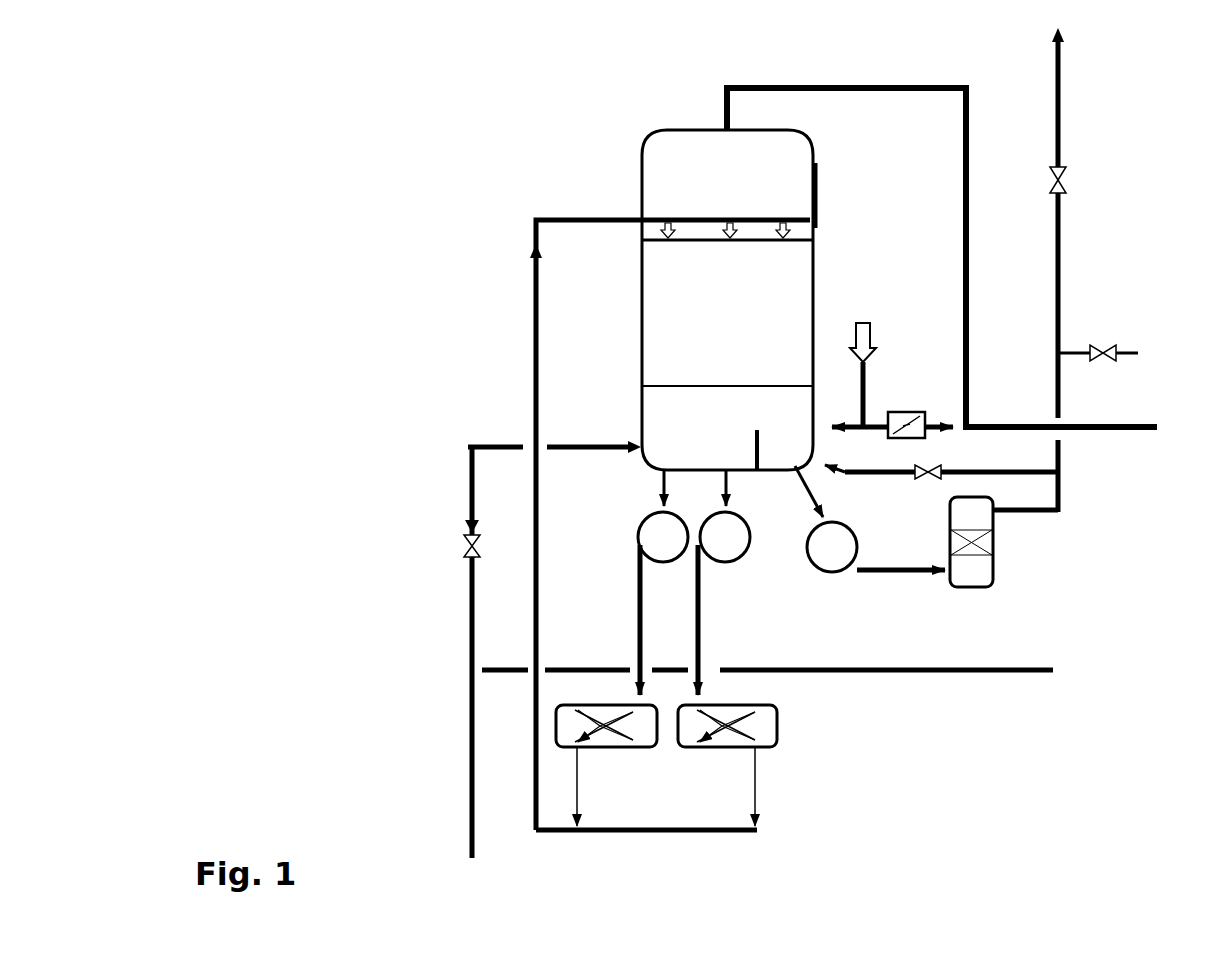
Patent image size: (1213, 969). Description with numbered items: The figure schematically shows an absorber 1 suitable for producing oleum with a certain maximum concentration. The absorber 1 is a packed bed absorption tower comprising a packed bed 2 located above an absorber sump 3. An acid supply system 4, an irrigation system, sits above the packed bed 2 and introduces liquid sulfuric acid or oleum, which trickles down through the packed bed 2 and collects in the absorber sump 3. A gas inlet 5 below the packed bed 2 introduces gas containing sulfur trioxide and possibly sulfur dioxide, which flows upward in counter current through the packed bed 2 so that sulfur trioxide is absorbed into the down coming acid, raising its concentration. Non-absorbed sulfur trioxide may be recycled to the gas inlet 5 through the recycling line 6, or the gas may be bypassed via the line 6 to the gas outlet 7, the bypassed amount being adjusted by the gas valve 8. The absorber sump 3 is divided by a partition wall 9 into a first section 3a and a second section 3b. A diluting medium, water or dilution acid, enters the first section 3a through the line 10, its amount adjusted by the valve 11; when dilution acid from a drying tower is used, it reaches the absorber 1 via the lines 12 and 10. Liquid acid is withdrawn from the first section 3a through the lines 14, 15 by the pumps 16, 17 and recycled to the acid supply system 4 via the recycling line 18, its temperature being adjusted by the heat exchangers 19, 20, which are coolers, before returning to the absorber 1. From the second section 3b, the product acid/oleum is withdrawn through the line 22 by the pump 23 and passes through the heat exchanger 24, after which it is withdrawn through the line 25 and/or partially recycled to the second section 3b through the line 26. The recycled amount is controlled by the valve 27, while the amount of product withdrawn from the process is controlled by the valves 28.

The absorber 1 is at (630, 150).
The packed bed 2 is at (798, 270).
The absorber sump 3 is at (676, 405).
The first section 3a is at (688, 455).
The second section 3b is at (800, 425).
The acid supply system 4 is at (772, 203).
The gas inlet 5 is at (826, 420).
The recycling line 6 is at (858, 74).
The gas outlet 7 is at (720, 105).
The gas valve 8 is at (905, 405).
The partition wall 9 is at (762, 418).
The line 10 is at (468, 452).
The valve 11 is at (467, 532).
The line 12 is at (997, 680).
The line 14 is at (658, 500).
The line 15 is at (744, 497).
The pump 16 is at (675, 548).
The pump 17 is at (742, 550).
The recycling line 18 is at (532, 246).
The heat exchanger 19 is at (663, 752).
The heat exchanger 20 is at (796, 728).
The line 22 is at (836, 497).
The pump 23 is at (834, 556).
The heat exchanger 24 is at (1000, 562).
The line 25 is at (1063, 482).
The line 26 is at (1021, 483).
The valve 27 is at (955, 462).
The valves 28 is at (1070, 180).